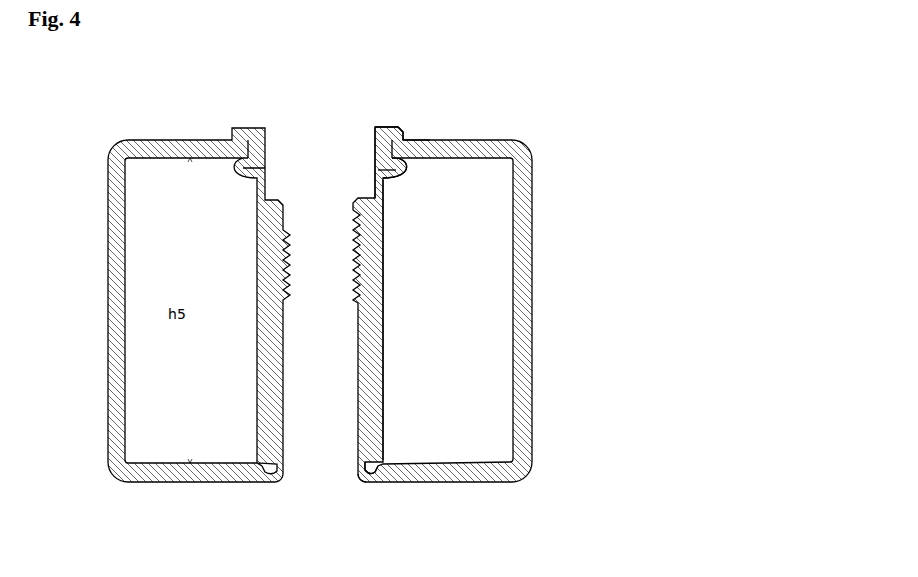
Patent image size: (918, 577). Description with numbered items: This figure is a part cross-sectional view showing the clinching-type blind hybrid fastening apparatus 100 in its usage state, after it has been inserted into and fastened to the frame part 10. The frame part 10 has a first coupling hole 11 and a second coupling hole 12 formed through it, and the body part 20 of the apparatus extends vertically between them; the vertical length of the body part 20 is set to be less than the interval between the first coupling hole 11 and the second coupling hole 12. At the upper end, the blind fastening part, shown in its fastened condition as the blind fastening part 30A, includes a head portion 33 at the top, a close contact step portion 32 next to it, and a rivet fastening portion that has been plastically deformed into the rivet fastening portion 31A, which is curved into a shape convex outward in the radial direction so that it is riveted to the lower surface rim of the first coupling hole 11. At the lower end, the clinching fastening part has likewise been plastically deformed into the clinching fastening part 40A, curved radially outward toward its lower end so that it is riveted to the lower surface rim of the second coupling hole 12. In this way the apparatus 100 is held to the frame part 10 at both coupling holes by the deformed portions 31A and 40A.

The clinching-type blind hybrid fastening apparatus 100 is at (208, 98).
The frame part 10 is at (533, 337).
The body part 20 is at (385, 321).
The first coupling hole 11 is at (382, 127).
The second coupling hole 12 is at (359, 478).
The top protrusion 30A is at (401, 127).
The rivet fastening portion 31A is at (396, 177).
The close contact step portion 32 is at (376, 149).
The head portion 33 is at (424, 132).
The clinching fastening part 40A is at (372, 478).